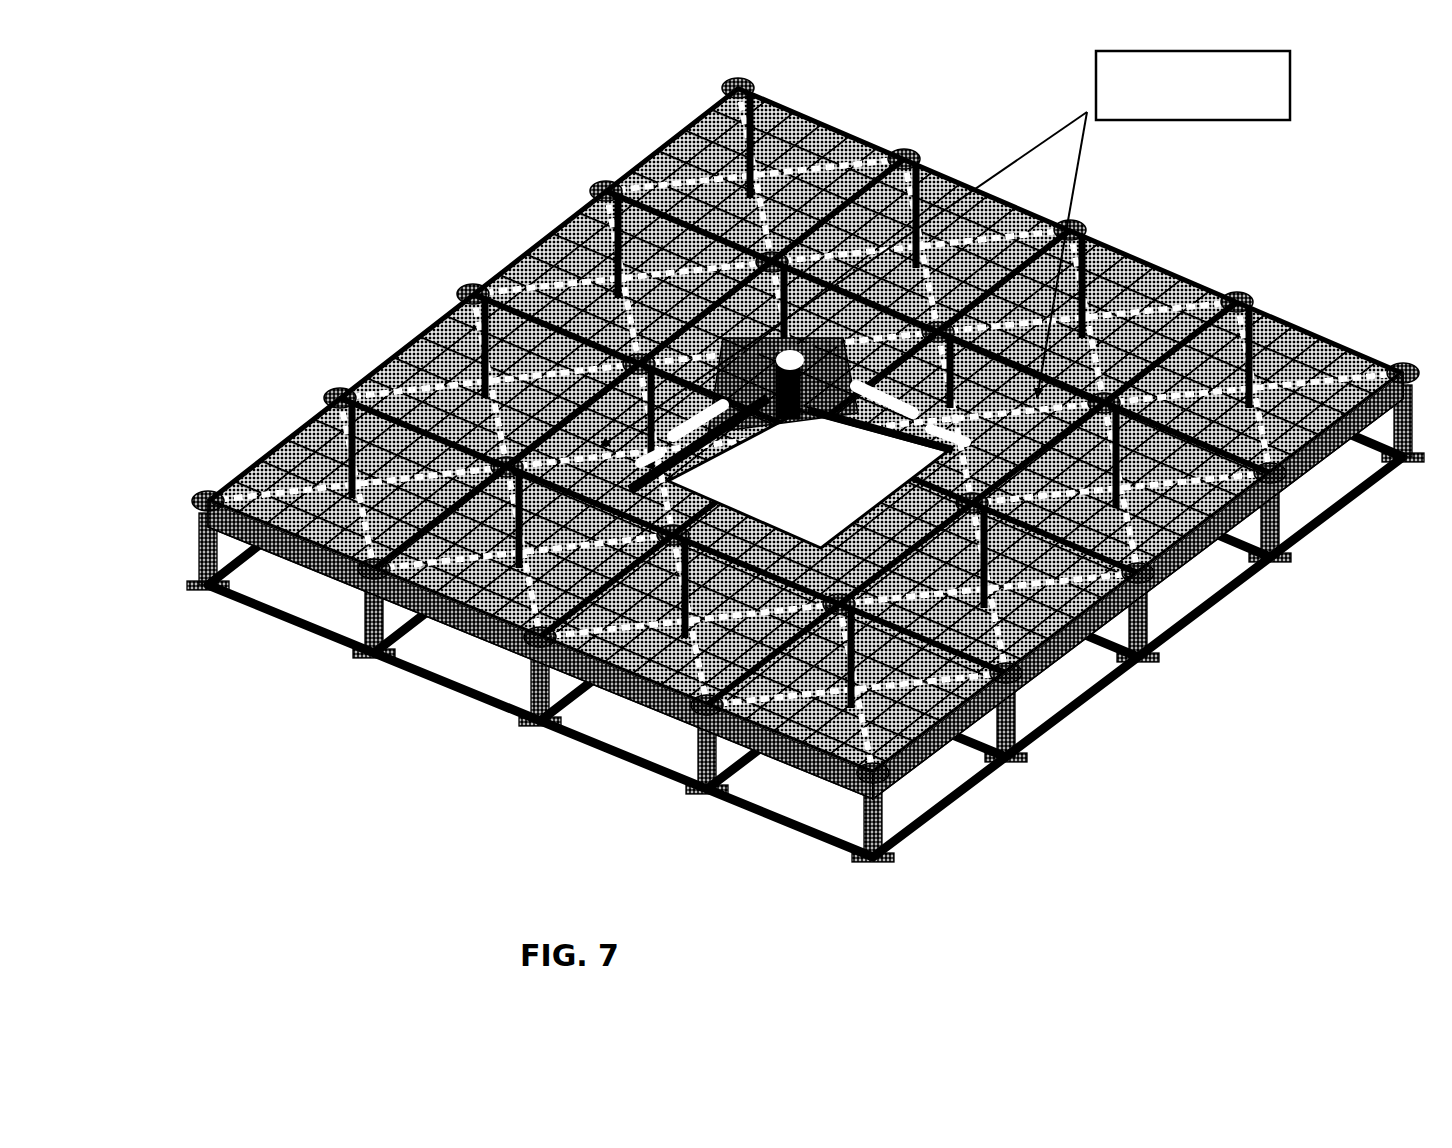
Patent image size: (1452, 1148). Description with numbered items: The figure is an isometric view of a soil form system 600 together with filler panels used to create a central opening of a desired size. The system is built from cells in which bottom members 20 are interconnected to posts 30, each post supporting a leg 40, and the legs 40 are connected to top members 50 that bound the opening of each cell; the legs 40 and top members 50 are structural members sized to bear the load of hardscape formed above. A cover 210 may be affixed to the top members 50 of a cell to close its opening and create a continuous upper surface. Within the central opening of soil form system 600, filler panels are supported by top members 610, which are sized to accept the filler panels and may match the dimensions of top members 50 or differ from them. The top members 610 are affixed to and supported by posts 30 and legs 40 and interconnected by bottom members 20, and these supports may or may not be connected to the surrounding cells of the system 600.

The soil form system 600 is at (192, 92).
The bottom members 20 is at (634, 762).
The posts 30 is at (845, 872).
The legs 40 is at (197, 493).
The top members 50 is at (287, 430).
The cover 210 is at (440, 317).
The top members 610 is at (889, 492).